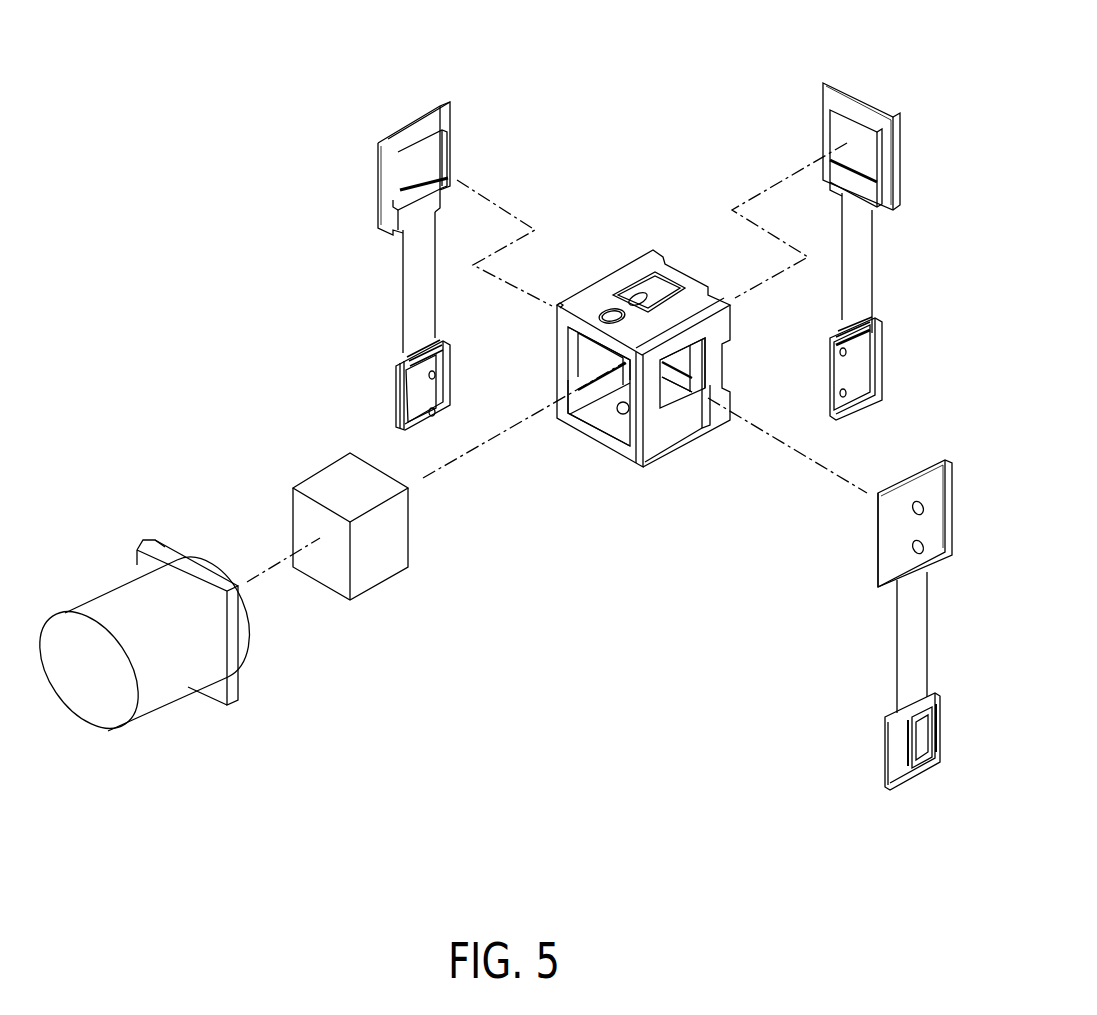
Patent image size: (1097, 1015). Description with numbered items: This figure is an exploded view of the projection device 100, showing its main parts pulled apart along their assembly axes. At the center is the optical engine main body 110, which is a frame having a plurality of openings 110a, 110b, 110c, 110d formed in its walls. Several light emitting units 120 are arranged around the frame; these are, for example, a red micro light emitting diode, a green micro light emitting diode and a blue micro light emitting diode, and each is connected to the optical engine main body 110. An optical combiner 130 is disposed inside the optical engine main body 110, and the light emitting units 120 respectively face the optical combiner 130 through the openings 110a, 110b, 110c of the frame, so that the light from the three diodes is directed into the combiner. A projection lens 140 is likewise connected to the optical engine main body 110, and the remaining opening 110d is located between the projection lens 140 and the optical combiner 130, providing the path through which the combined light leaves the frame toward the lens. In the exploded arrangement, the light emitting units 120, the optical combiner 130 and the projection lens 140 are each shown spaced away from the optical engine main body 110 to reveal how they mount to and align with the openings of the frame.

The projection device 100 is at (814, 818).
The optical engine main body 110 is at (637, 265).
The opening 110a is at (707, 363).
The opening 110b is at (668, 370).
The opening 110c is at (578, 350).
The opening 110d is at (568, 377).
The light emitting unit 120 is at (402, 105).
The optical combiner 130 is at (338, 485).
The projection lens 140 is at (123, 595).